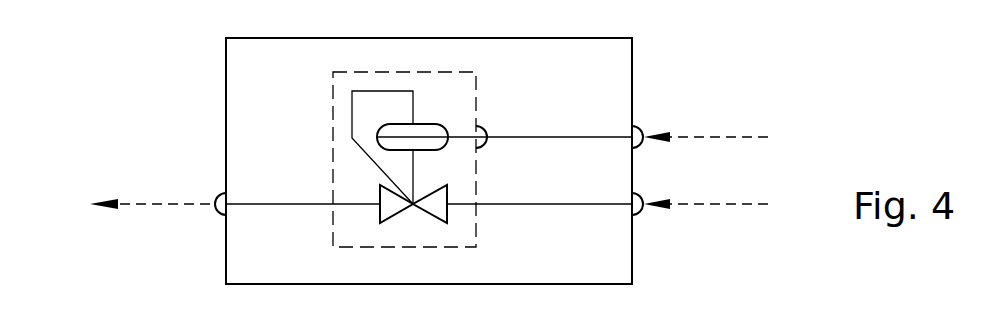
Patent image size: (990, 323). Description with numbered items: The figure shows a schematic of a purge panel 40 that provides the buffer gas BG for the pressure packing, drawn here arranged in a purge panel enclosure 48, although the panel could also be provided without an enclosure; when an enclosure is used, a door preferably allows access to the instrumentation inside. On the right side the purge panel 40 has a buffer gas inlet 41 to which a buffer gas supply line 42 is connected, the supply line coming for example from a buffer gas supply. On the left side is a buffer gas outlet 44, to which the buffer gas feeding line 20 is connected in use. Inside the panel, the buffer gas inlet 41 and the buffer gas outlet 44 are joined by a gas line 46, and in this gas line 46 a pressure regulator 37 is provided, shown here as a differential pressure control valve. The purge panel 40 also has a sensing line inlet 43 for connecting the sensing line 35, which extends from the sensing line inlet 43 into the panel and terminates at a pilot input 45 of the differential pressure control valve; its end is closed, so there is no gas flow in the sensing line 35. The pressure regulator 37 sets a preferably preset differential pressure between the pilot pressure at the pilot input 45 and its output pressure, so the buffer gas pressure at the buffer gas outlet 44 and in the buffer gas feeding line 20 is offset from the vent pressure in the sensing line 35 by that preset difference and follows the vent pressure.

The purge panel 40 is at (196, 54).
The purge panel enclosure 48 is at (226, 117).
The pressure regulator 37 is at (333, 110).
The gas line 46 is at (567, 205).
The pilot input 45 is at (487, 130).
The sensing line inlet 43 is at (644, 126).
The sensing line 35 is at (720, 137).
The buffer gas inlet 41 is at (637, 215).
The buffer gas supply line 42 is at (728, 204).
The buffer gas outlet 44 is at (215, 214).
The buffer gas feeding line 20 is at (150, 203).